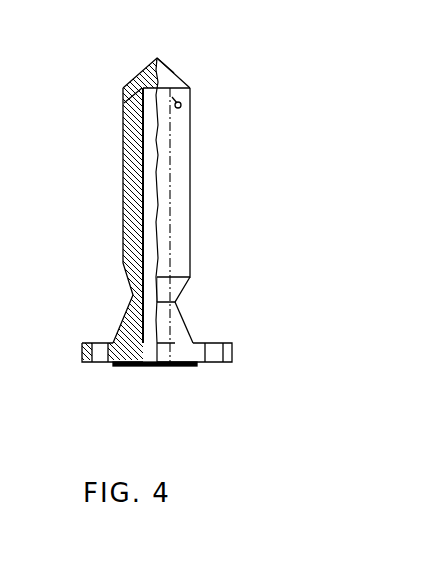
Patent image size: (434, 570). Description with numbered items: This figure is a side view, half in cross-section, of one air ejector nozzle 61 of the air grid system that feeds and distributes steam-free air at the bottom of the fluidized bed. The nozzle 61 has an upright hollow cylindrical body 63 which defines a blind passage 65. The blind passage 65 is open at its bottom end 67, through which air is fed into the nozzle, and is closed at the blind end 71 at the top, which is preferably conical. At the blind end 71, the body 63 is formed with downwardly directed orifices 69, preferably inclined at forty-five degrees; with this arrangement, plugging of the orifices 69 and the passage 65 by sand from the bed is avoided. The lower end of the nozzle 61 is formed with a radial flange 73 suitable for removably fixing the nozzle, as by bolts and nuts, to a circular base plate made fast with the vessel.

The nozzle 61 is at (200, 218).
The upright hollow cylindrical body 63 is at (190, 178).
The blind passage 65 is at (150, 219).
The bottom end 67 is at (124, 367).
The downwardly directed orifices 69 is at (123, 89).
The blind end 71 is at (177, 68).
The radial flange 73 is at (219, 342).